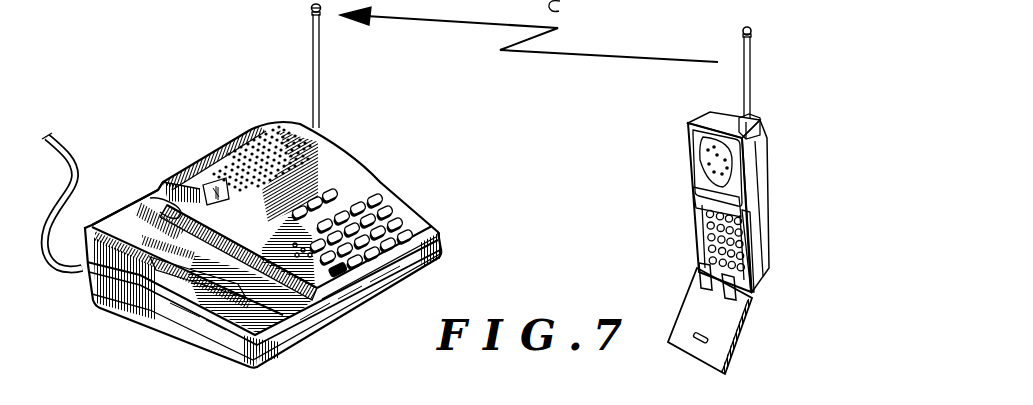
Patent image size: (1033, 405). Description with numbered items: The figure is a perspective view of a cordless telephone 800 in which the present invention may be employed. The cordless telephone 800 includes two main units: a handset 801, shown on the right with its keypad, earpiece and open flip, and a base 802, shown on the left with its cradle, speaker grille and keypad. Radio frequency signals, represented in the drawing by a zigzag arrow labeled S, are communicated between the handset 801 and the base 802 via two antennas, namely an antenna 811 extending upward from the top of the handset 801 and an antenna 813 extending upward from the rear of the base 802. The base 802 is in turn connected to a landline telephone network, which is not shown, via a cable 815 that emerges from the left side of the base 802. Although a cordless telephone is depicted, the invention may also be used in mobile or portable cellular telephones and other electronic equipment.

The cordless telephone 800 is at (555, 299).
The handset 801 is at (775, 212).
The base 802 is at (406, 190).
The antenna 811 is at (753, 64).
The antenna 813 is at (322, 78).
The cable 815 is at (72, 147).